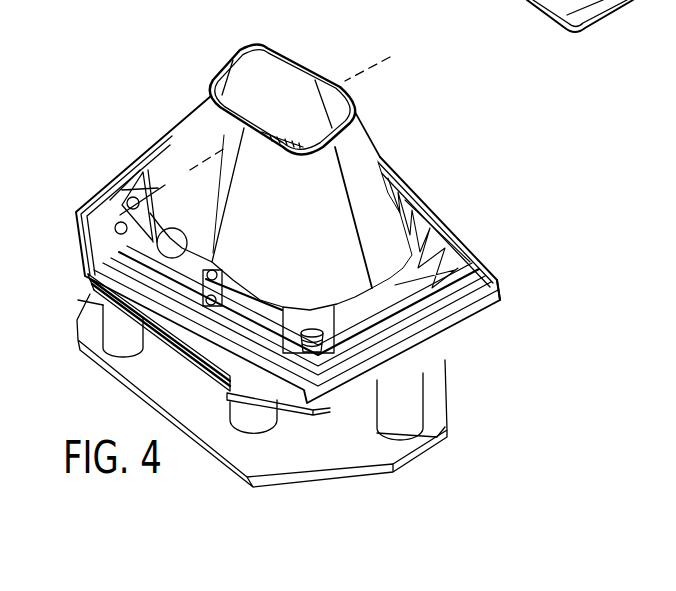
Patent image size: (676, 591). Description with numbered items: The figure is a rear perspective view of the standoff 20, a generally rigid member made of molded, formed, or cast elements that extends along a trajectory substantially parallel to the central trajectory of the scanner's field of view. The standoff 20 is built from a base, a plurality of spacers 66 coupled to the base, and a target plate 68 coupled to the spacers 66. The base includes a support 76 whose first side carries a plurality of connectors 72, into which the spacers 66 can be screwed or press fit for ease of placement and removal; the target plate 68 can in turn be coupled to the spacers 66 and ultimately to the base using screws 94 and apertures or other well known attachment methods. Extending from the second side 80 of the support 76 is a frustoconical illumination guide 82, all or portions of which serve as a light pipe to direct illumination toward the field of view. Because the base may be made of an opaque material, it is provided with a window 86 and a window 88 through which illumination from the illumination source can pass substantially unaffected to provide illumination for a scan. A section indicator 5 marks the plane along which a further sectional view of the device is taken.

The standoff 20 is at (446, 143).
The illumination guide 82 is at (245, 50).
The second side 80 is at (450, 225).
The support 76 is at (498, 287).
The window 86 is at (183, 267).
The window 88 is at (100, 298).
The connectors 72 is at (228, 410).
The spacers 66 is at (238, 447).
The target plate 68 is at (332, 477).
The screws 94 is at (312, 352).
The section view indicator 5 is at (390, 57).